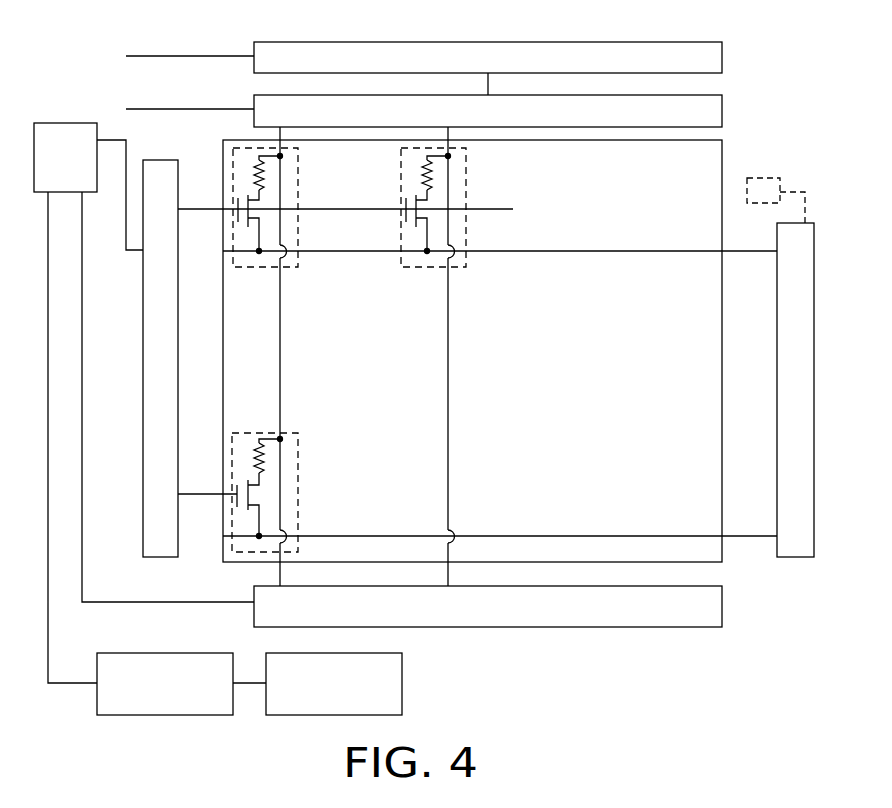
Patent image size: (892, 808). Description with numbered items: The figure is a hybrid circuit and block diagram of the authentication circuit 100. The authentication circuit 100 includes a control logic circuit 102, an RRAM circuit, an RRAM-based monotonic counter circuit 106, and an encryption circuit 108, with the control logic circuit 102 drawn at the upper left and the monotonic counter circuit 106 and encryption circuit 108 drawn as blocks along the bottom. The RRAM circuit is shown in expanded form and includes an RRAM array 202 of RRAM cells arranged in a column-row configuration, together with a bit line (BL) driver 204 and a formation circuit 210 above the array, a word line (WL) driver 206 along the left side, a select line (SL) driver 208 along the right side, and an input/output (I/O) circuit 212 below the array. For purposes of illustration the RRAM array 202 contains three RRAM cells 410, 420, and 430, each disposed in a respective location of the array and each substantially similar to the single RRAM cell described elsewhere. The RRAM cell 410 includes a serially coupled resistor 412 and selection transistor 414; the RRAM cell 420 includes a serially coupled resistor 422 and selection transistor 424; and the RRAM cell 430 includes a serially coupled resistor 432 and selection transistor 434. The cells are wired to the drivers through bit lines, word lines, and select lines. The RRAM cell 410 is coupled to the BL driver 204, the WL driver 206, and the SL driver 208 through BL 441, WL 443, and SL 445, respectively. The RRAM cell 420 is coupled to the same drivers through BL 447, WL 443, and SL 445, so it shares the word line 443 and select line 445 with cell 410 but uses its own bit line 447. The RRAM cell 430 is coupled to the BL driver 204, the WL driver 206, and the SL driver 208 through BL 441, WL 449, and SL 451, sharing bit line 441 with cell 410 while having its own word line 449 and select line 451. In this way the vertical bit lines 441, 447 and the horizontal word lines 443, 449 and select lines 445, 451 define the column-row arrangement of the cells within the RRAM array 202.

The authentication circuit 100 is at (803, 739).
The control logic circuit 102 is at (64, 135).
The RRAM-based monotonic counter circuit 106 is at (165, 684).
The encryption circuit 108 is at (334, 684).
The RRAM array 202 is at (740, 162).
The bit line (BL) driver 204 is at (722, 111).
The word line (WL) driver 206 is at (153, 445).
The select line (SL) driver 208 is at (800, 555).
The formation circuit 210 is at (722, 56).
The input/output (I/O) circuit 212 is at (688, 617).
The RRAM cell 410 is at (299, 233).
The resistor 412 is at (262, 178).
The selection transistor 414 is at (244, 232).
The RRAM cell 420 is at (457, 233).
The resistor 422 is at (430, 178).
The selection transistor 424 is at (398, 255).
The RRAM cell 430 is at (275, 517).
The resistor 432 is at (267, 458).
The selection transistor 434 is at (243, 512).
The bit line (BL) 441 is at (280, 352).
The word line (WL) 443 is at (207, 203).
The select line (SL) 445 is at (353, 255).
The bit line (BL) 447 is at (448, 352).
The word line (WL) 449 is at (195, 490).
The select line (SL) 451 is at (388, 528).